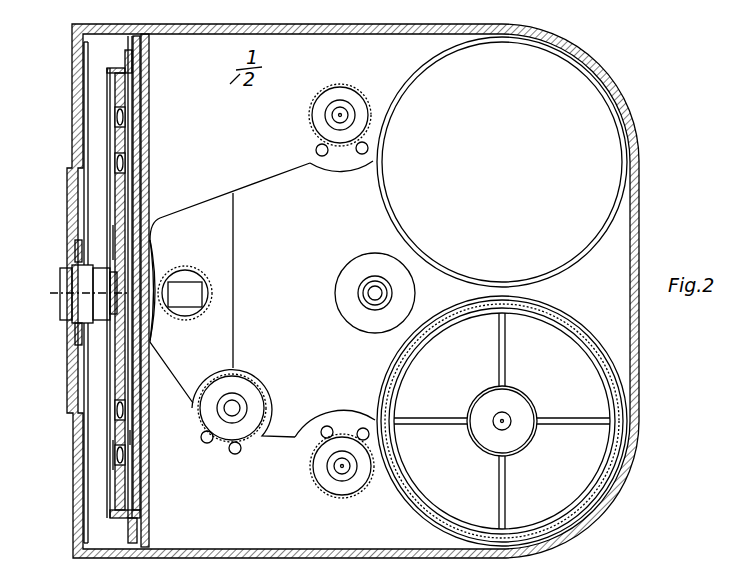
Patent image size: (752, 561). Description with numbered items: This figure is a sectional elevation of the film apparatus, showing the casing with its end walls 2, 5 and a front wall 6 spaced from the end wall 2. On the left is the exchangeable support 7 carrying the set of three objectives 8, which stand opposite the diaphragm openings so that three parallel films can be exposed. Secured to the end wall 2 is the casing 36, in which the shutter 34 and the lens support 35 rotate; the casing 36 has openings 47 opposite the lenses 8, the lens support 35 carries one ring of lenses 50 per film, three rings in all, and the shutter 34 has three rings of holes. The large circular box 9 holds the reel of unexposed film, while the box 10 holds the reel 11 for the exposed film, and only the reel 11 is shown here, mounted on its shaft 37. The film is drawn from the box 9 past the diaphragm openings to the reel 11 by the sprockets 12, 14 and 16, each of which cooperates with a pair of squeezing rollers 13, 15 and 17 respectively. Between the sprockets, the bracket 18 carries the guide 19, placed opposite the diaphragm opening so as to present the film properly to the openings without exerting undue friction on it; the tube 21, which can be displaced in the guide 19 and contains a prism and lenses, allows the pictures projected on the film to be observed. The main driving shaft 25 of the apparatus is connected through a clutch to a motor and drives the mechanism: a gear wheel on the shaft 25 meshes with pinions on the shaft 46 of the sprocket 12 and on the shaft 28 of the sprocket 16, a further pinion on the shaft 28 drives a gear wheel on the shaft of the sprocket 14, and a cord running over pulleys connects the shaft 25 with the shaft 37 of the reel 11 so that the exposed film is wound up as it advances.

The end wall 2 is at (145, 478).
The end wall 5 is at (638, 223).
The front wall 6 is at (75, 467).
The exchangeable support 7 is at (72, 375).
The objectives 8 is at (60, 293).
The box 9 is at (393, 214).
The box 10 is at (397, 370).
The reel 11 is at (477, 443).
The sprocket 12 is at (312, 116).
The pair of squeezing rollers 13 is at (360, 154).
The sprocket 14 is at (255, 396).
The pair of squeezing rollers 15 is at (208, 443).
The sprocket 16 is at (359, 492).
The pair of squeezing rollers 17 is at (362, 428).
The bracket 18 is at (253, 184).
The guide 19 is at (185, 210).
The tube 21 is at (197, 318).
The main driving shaft 25 is at (371, 296).
The shaft 28 is at (345, 466).
The shutter 34 is at (133, 437).
The lens support 35 is at (125, 453).
The casing 36 is at (110, 232).
The shaft 37 is at (502, 427).
The shaft 46 is at (347, 108).
The openings 47 is at (108, 166).
The lenses 50 is at (118, 163).